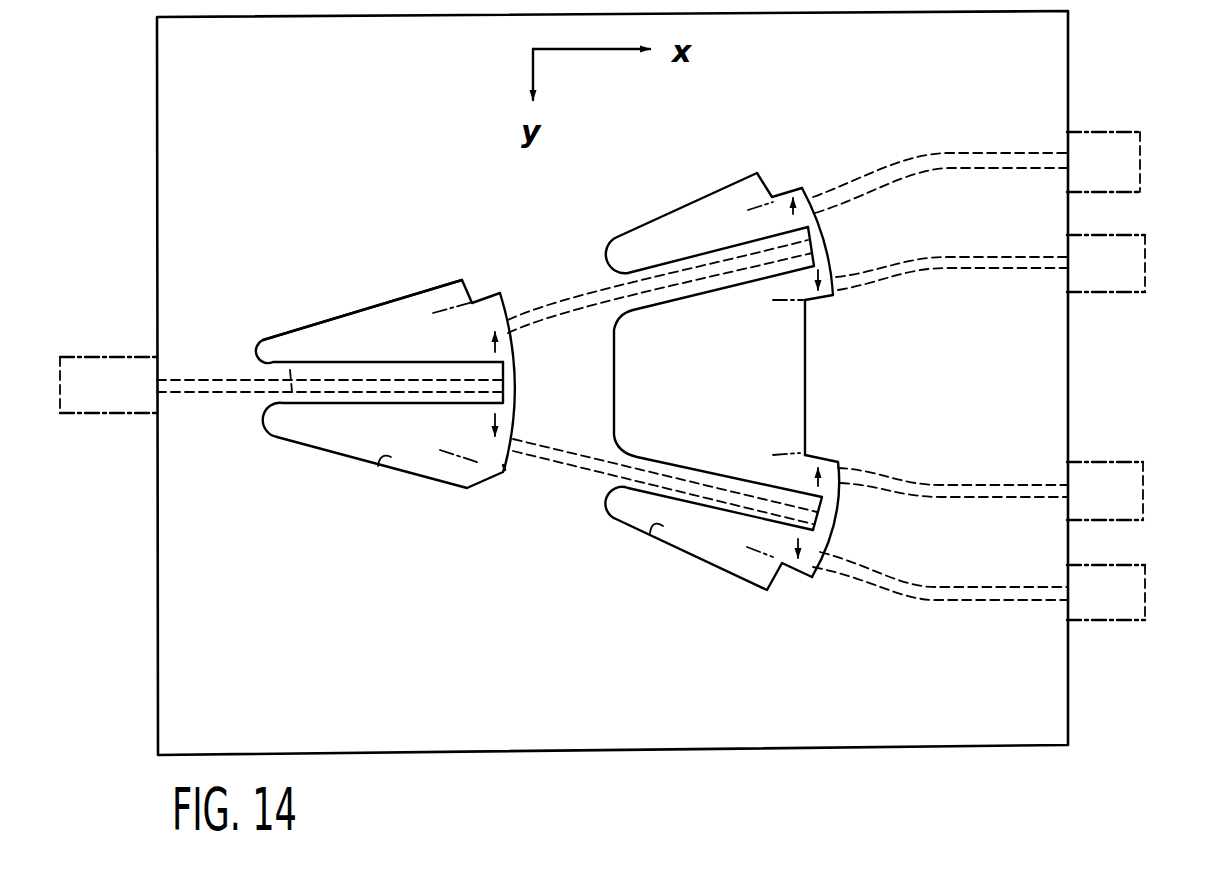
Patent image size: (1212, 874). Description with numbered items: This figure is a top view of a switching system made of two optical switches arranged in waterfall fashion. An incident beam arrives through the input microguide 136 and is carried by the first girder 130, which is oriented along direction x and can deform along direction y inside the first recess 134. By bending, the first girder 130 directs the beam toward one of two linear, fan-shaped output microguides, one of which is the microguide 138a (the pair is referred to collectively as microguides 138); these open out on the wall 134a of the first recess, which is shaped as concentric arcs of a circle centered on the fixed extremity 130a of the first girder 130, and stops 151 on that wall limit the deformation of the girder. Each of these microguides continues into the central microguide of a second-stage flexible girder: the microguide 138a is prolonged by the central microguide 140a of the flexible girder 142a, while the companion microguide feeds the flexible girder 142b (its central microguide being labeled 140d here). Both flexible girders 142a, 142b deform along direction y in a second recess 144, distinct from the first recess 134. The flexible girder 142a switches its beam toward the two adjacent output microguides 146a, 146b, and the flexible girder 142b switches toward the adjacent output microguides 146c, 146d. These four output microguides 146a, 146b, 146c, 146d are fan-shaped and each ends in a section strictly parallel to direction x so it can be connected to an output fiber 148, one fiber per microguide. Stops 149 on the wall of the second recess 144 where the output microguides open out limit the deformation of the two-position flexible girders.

The first girder 130 is at (412, 352).
The fixed extremity of the first girder 130a is at (307, 350).
The first recess 134 is at (378, 461).
The wall of the first recess 134a is at (290, 370).
The input microguide 136 is at (203, 381).
The fiber segment to upper coupler 138 is at (595, 306).
The output microguide 138a is at (580, 467).
The central microguide 140a is at (738, 498).
The upper body portion of coupler 140d is at (667, 280).
The flexible girder 142a is at (727, 510).
The flexible girder 142b is at (722, 247).
The second recess 144 is at (651, 528).
The output microguide 146a is at (997, 593).
The output microguide 146b is at (975, 487).
The output microguide 146c is at (970, 266).
The output microguide 146d is at (968, 153).
The output fiber 148 is at (1153, 168).
The stops 149 is at (780, 187).
The stops 151 is at (480, 290).